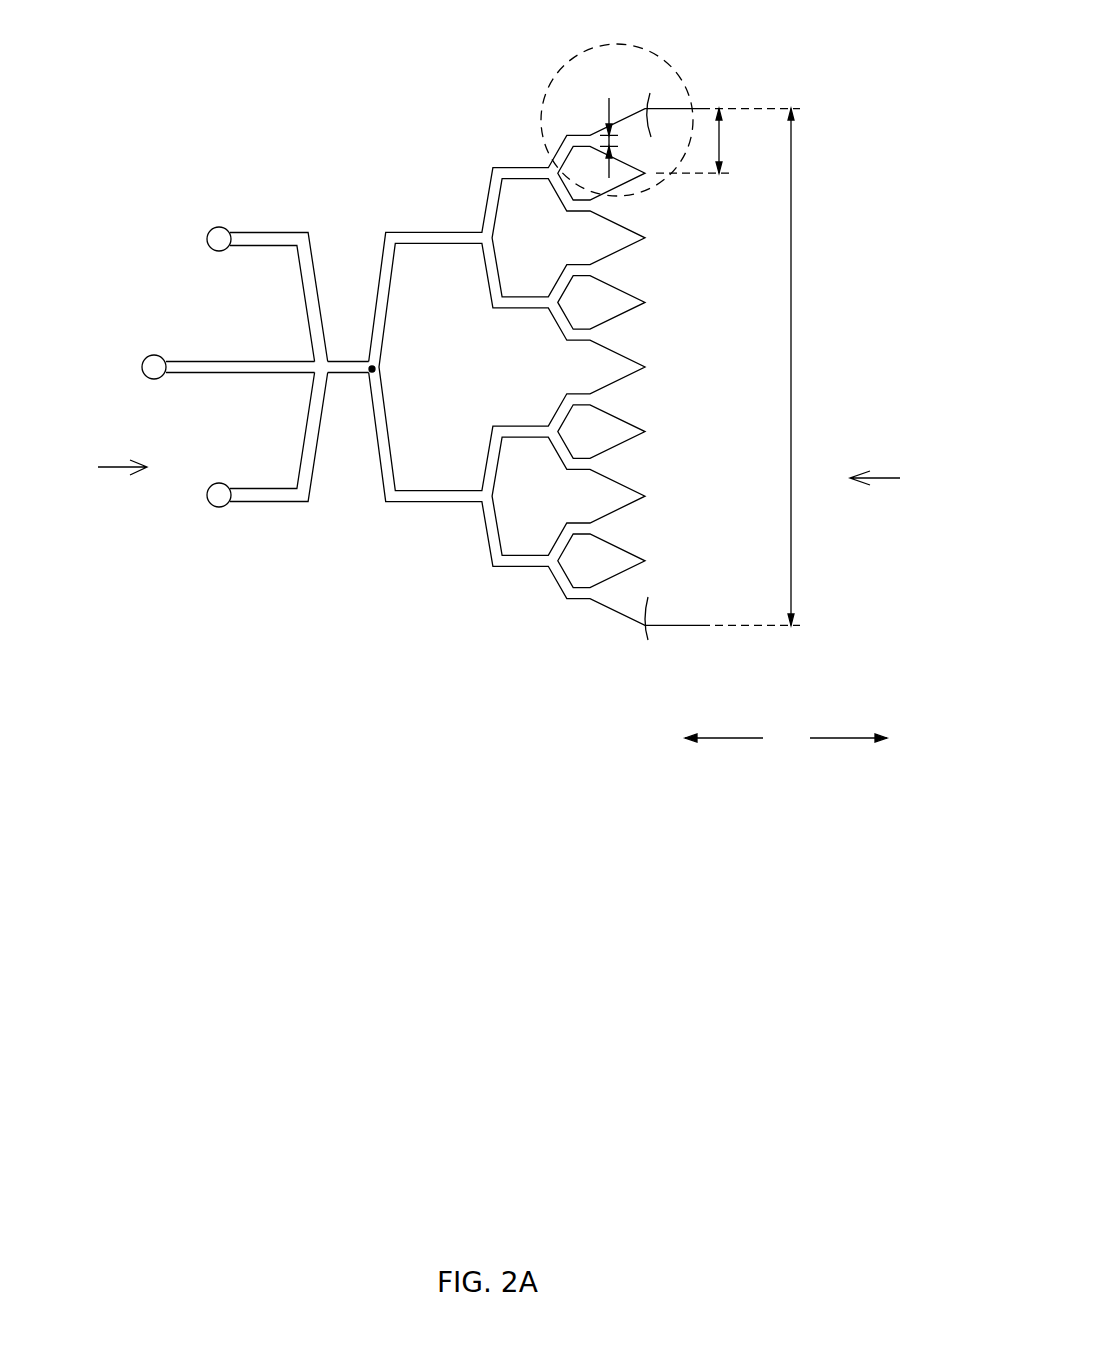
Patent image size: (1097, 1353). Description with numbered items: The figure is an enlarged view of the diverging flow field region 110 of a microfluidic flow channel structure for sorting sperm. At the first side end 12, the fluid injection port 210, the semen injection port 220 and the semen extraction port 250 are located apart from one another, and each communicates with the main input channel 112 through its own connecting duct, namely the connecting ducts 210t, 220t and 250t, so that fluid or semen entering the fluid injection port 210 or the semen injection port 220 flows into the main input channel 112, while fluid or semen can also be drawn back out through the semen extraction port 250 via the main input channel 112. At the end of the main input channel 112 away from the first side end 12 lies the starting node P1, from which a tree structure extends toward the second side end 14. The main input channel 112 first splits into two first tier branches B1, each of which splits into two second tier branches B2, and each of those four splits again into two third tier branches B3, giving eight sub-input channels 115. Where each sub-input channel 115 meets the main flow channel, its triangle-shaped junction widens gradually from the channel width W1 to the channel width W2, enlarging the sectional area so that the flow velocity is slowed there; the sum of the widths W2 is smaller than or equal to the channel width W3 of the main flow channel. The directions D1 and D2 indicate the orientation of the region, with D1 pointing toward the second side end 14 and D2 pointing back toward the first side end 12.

The diverging flow field region 110 is at (205, 43).
The main input channel 112 is at (346, 368).
The sub-input channels 115 is at (655, 55).
The first side end 12 is at (106, 468).
The second side end 14 is at (893, 483).
The fluid injection port 210 is at (210, 247).
The connecting duct 210t is at (268, 240).
The semen injection port 220 is at (209, 501).
The connecting duct 220t is at (268, 497).
The semen extraction port 250 is at (144, 375).
The connecting duct 250t is at (213, 368).
The starting node P1 is at (372, 376).
The first tier branches B1 is at (443, 530).
The second tier branches B2 is at (530, 592).
The third tier branches B3 is at (590, 625).
The channel width W1 is at (612, 123).
The channel width W2 is at (713, 141).
The channel width of the main flow channel W3 is at (771, 367).
The first direction D1 is at (848, 724).
The second direction D2 is at (724, 724).